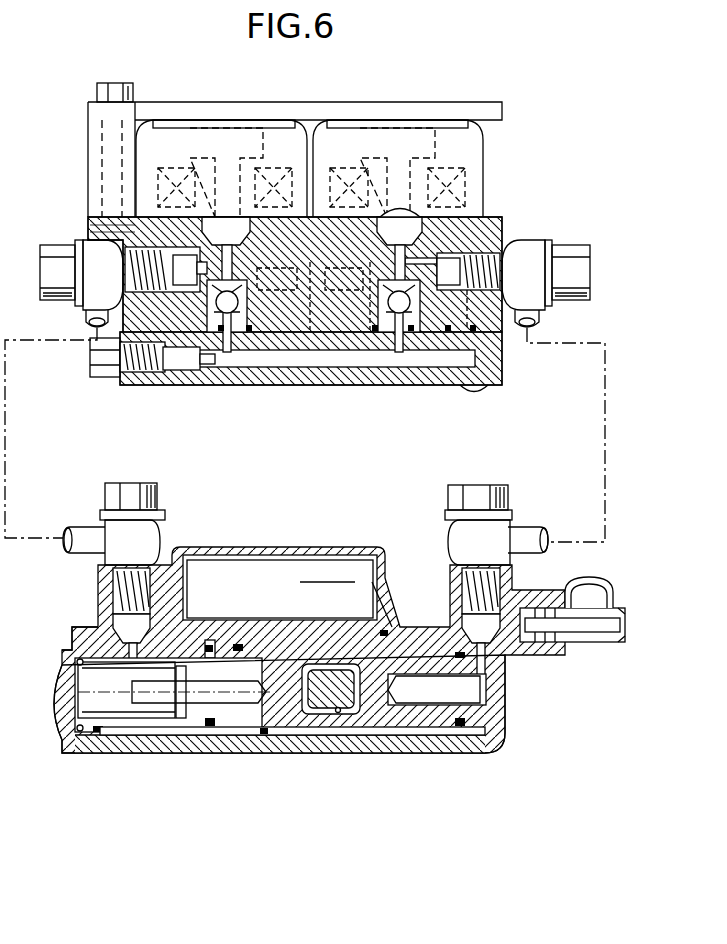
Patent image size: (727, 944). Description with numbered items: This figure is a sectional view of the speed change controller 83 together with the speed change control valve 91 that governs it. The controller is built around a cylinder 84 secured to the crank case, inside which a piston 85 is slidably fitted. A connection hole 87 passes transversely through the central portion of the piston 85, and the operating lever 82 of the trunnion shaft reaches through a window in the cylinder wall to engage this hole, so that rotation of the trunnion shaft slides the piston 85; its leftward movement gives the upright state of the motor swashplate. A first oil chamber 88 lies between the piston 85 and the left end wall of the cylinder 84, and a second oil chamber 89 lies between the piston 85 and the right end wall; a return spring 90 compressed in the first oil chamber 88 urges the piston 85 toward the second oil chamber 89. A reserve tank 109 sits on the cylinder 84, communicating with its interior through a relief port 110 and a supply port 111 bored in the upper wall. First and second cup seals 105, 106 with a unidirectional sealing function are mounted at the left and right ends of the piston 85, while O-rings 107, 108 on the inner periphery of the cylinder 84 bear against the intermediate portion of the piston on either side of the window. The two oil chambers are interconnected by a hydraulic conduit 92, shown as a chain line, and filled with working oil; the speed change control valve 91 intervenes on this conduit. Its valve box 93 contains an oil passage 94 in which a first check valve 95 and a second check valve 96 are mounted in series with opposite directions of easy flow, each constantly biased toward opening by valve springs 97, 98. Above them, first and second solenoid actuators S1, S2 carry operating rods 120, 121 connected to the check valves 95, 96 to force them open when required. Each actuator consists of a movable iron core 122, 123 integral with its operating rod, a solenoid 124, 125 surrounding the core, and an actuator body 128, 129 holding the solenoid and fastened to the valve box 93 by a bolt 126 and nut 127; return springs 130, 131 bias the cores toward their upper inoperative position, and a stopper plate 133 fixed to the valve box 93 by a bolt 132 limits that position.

The operating lever 82 is at (328, 702).
The speed change controller 83 is at (232, 757).
The cylinder 84 is at (405, 747).
The piston 85 is at (288, 735).
The connection hole 87 is at (338, 712).
The first oil chamber 88 is at (121, 699).
The second oil chamber 89 is at (476, 735).
The return spring 90 is at (78, 715).
The speed change control valve 91 is at (308, 386).
The hydraulic conduit 92 is at (6, 408).
The valve box 93 is at (287, 385).
The oil passage 94 is at (346, 367).
The first check valve 95 is at (208, 318).
The second check valve 96 is at (380, 305).
The valve spring 97 is at (230, 312).
The valve spring 98 is at (398, 314).
The first cup seal 105 is at (212, 735).
The second cup seal 106 is at (457, 735).
The O-ring 107 is at (238, 642).
The O-ring 108 is at (366, 620).
The reserve tank 109 is at (372, 580).
The relief port 110 is at (206, 640).
The supply port 111 is at (388, 640).
The operating rod 120 is at (216, 300).
The operating rod 121 is at (413, 311).
The movable iron core 122 is at (224, 128).
The movable iron core 123 is at (398, 130).
The solenoid 124 is at (176, 174).
The solenoid 125 is at (350, 174).
The bolt 126 is at (290, 240).
The nut 127 is at (303, 300).
The actuator body 128 is at (282, 143).
The actuator body 129 is at (452, 140).
The return spring 130 is at (214, 237).
The return spring 131 is at (410, 240).
The bolt 132 is at (112, 84).
The stopper plate 133 is at (346, 110).
The first solenoid actuator S1 is at (177, 114).
The second solenoid actuator S2 is at (486, 170).